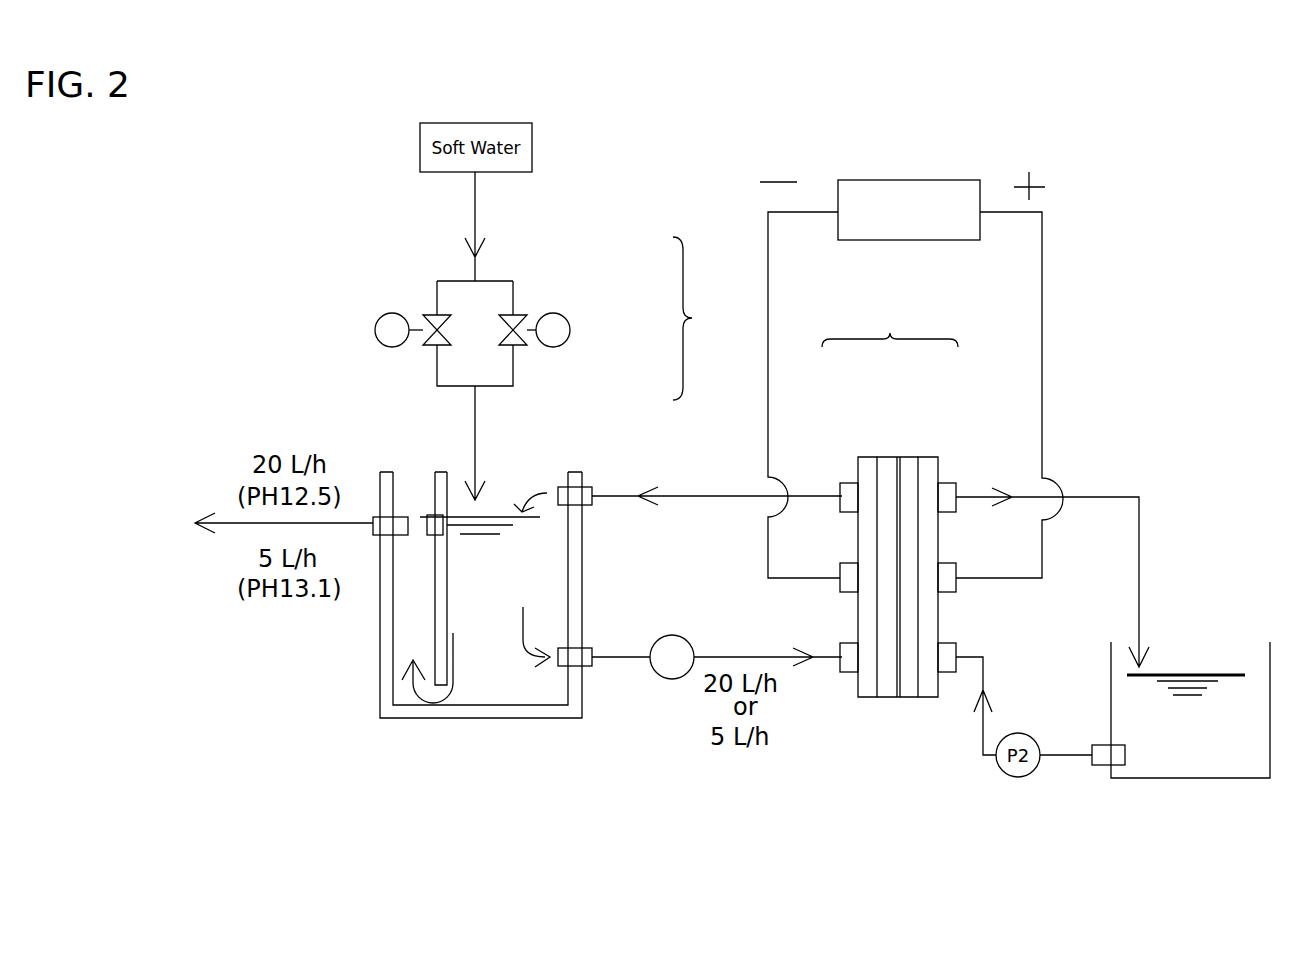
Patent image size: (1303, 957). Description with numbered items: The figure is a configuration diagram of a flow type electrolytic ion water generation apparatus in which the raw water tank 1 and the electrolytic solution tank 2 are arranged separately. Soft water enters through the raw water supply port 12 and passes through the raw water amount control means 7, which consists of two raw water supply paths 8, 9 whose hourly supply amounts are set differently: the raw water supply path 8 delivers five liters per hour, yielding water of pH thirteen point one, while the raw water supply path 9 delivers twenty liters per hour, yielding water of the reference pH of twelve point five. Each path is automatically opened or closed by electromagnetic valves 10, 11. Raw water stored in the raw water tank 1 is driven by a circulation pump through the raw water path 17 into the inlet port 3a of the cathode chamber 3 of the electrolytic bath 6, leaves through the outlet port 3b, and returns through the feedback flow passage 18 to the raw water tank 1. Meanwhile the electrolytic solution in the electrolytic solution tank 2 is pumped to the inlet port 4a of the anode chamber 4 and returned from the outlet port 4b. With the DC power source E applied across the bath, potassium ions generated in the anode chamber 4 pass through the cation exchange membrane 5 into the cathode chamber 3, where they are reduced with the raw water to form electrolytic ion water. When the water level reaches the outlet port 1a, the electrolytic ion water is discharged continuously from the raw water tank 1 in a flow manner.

The raw water tank 1 is at (480, 673).
The outlet port 1a is at (375, 530).
The electrolytic solution tank 2 is at (1245, 742).
The cathode chamber 3 is at (859, 456).
The inlet port 3a is at (842, 676).
The outlet port 3b is at (845, 483).
The anode chamber 4 is at (930, 457).
The inlet port 4a is at (955, 645).
The outlet port 4b is at (955, 481).
The cation exchange membrane 5 is at (896, 457).
The electrolytic bath 6 is at (917, 533).
The raw water amount control means 7 is at (507, 310).
The raw water supply path 8 is at (437, 298).
The raw water supply path 9 is at (513, 298).
The electromagnetic valve 10 is at (427, 346).
The electromagnetic valve 11 is at (520, 346).
The raw water supply port 12 is at (475, 281).
The raw water path 17 is at (713, 654).
The feedback flow passage 18 is at (685, 493).
The DC power source E is at (912, 178).